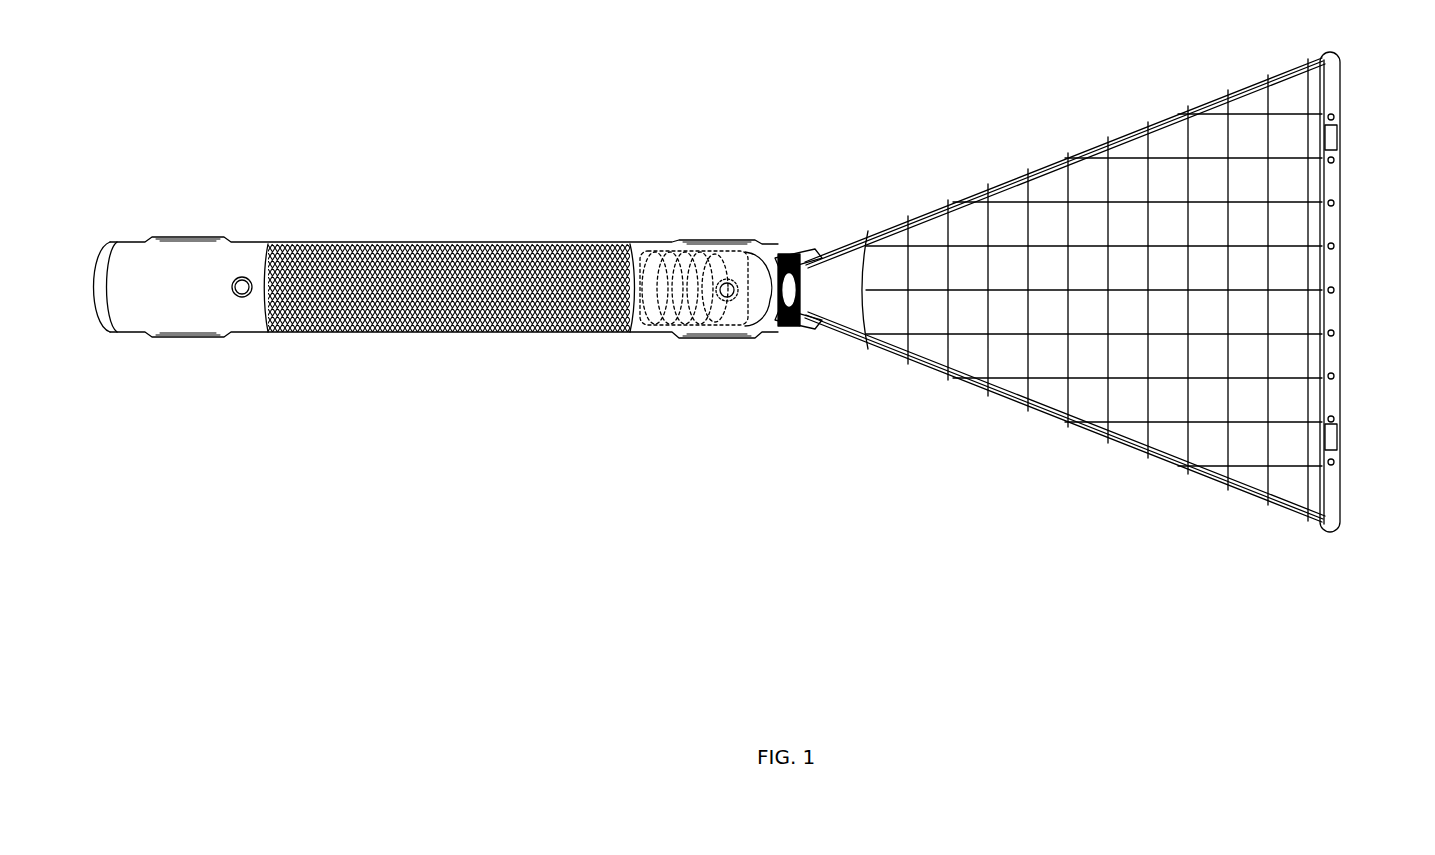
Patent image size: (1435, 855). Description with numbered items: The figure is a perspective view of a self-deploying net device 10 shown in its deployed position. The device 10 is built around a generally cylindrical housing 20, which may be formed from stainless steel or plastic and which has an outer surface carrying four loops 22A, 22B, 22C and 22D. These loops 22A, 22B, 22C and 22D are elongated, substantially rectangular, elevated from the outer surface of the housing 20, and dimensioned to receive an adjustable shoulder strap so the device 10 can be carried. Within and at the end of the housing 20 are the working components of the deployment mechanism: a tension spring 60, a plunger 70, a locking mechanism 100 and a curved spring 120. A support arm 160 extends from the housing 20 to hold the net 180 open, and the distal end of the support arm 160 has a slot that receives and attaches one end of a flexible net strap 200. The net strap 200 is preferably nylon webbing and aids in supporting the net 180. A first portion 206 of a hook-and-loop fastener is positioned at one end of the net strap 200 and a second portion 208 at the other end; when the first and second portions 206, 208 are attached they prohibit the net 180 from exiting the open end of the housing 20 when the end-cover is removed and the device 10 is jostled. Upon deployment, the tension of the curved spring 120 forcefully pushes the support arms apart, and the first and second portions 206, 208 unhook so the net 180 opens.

The device 10 is at (296, 212).
The housing 20 is at (265, 334).
The loop 22A is at (161, 240).
The loop 22B is at (698, 244).
The loop 22C is at (161, 334).
The loop 22D is at (700, 340).
The tension spring 60 is at (655, 247).
The plunger 70 is at (747, 260).
The locking mechanism 100 is at (742, 302).
The curved spring 120 is at (764, 314).
The support arm 160 is at (955, 195).
The net 180 is at (1168, 348).
The net strap 200 is at (1334, 222).
The first portion of hook-and-loop fastener 206 is at (1336, 437).
The second portion of hook-and-loop fastener 208 is at (1337, 138).